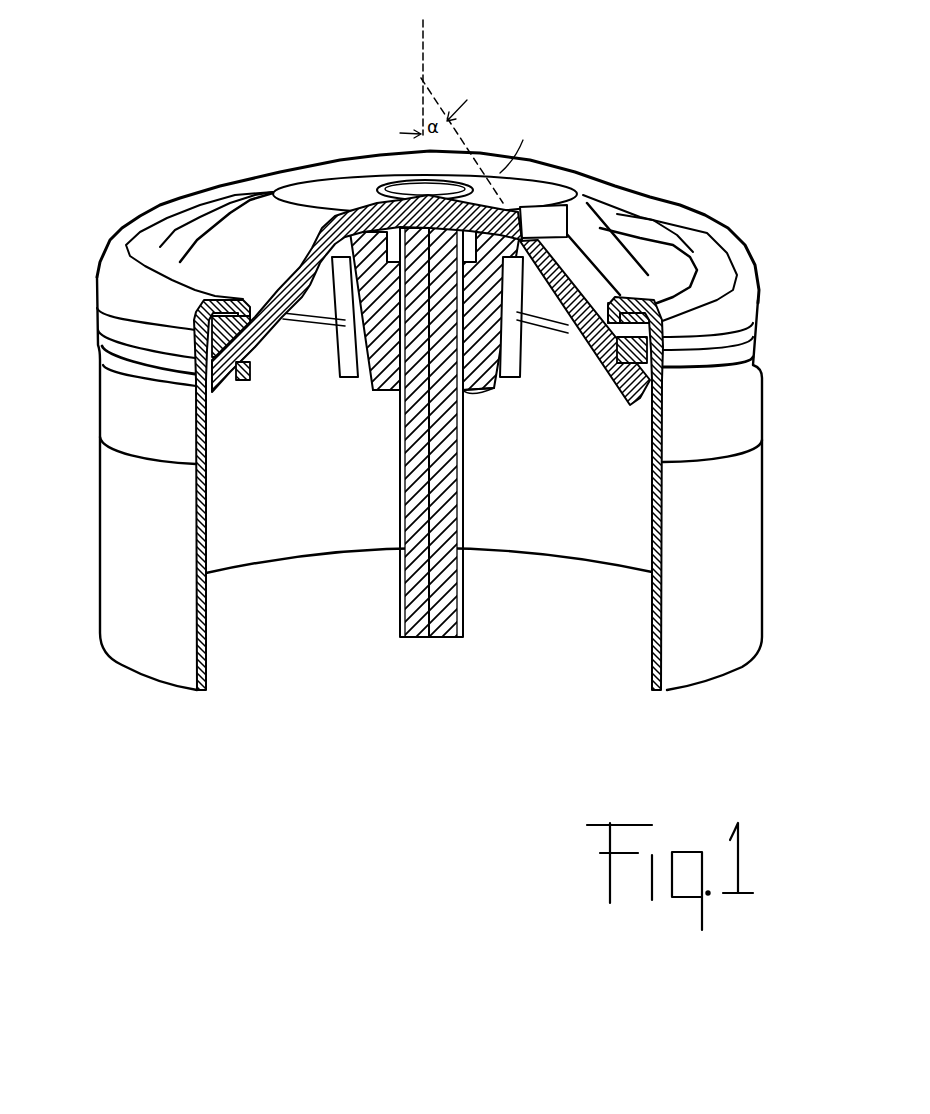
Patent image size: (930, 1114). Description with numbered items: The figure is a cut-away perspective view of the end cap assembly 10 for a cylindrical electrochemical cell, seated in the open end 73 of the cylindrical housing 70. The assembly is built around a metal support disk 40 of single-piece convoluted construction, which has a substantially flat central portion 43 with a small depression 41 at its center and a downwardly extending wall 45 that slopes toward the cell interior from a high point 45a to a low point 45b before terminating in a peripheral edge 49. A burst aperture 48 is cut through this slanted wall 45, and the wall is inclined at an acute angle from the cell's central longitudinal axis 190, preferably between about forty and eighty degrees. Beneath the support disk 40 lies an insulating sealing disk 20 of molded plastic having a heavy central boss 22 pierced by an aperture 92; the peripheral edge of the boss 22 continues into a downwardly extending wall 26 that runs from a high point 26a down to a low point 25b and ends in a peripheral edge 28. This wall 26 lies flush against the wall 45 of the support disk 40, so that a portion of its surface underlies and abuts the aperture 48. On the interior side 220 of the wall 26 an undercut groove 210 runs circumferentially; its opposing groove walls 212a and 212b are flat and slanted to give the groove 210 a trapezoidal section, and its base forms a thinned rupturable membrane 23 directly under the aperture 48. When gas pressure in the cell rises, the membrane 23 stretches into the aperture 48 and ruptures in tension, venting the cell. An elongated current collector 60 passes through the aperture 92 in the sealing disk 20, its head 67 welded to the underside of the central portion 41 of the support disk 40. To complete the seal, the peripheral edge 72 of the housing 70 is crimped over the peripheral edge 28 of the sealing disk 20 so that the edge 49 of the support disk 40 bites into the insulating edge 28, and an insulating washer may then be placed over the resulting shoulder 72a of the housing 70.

The end cap assembly 10 is at (199, 163).
The sealing disk 20 is at (362, 395).
The central boss 22 is at (343, 390).
The rupturable membrane 23 is at (568, 337).
The skirt wall 25b is at (618, 400).
The downwardly extending wall 26 is at (577, 270).
The high point 26a is at (543, 190).
The peripheral edge 28 is at (165, 318).
The metal support disk 40 is at (333, 180).
The central depression 41 is at (396, 186).
The flat central portion 43 is at (523, 140).
The downwardly extending wall 45 is at (643, 187).
The high point 45a is at (267, 186).
The low point 45b is at (252, 386).
The burst aperture 48 is at (586, 205).
The peripheral edge 49 is at (241, 390).
The current collector 60 is at (462, 598).
The head 67 is at (367, 200).
The cylindrical housing 70 is at (766, 462).
The peripheral edge 72 is at (137, 285).
The shoulder 72a is at (143, 240).
The open end 73 is at (177, 235).
The aperture 92 is at (467, 395).
The central longitudinal axis 190 is at (424, 42).
The undercut groove 210 is at (295, 312).
The groove wall 212a is at (300, 333).
The groove wall 212b is at (288, 328).
The interior side 220 is at (290, 360).